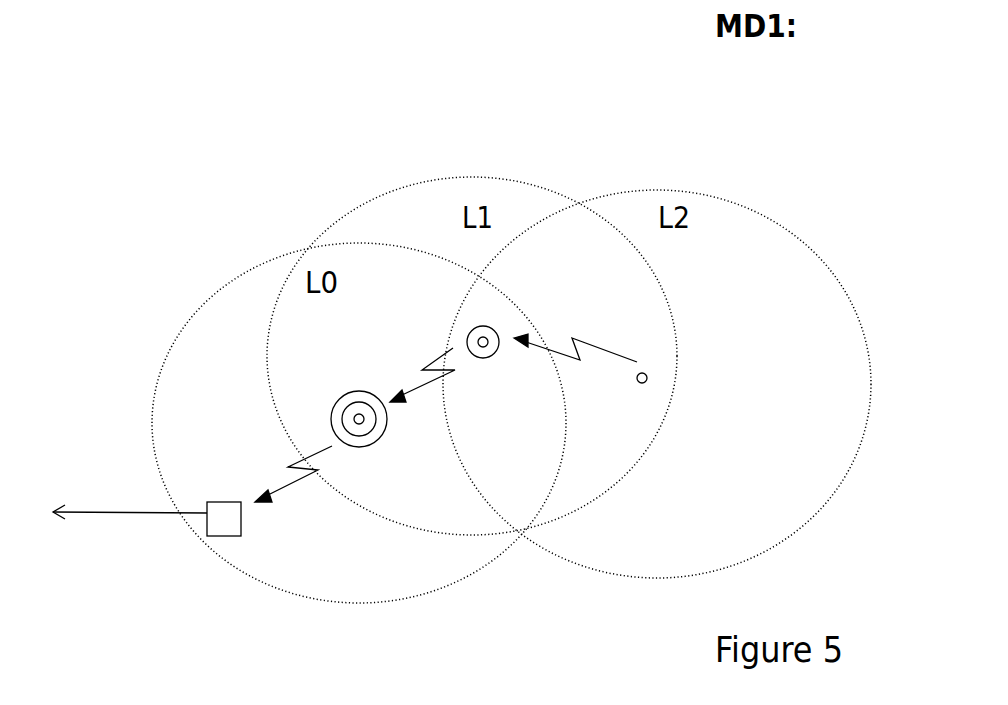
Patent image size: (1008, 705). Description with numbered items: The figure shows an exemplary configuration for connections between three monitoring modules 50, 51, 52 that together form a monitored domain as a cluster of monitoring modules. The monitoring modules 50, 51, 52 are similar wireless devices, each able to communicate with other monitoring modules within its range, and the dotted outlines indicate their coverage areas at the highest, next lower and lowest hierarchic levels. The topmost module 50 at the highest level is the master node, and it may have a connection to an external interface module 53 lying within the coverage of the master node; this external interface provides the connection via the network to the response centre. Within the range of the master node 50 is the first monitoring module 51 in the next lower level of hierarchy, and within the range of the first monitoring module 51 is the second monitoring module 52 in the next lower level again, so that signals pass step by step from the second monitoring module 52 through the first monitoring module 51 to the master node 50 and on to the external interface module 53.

The monitoring module 50 is at (357, 385).
The first monitoring module 51 is at (492, 322).
The second monitoring module 52 is at (650, 368).
The external interface module 53 is at (241, 525).